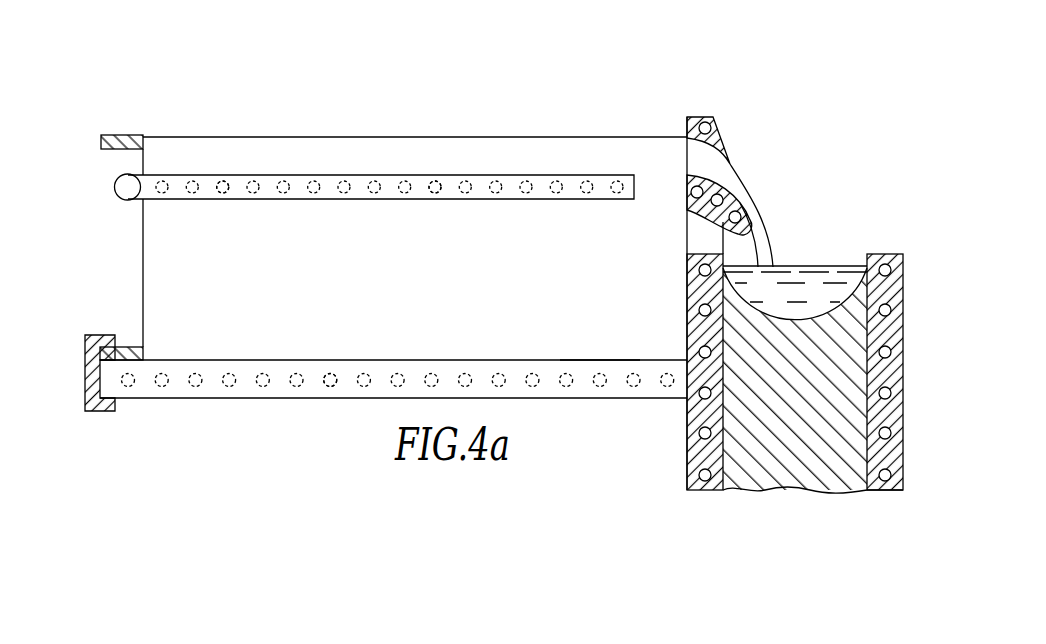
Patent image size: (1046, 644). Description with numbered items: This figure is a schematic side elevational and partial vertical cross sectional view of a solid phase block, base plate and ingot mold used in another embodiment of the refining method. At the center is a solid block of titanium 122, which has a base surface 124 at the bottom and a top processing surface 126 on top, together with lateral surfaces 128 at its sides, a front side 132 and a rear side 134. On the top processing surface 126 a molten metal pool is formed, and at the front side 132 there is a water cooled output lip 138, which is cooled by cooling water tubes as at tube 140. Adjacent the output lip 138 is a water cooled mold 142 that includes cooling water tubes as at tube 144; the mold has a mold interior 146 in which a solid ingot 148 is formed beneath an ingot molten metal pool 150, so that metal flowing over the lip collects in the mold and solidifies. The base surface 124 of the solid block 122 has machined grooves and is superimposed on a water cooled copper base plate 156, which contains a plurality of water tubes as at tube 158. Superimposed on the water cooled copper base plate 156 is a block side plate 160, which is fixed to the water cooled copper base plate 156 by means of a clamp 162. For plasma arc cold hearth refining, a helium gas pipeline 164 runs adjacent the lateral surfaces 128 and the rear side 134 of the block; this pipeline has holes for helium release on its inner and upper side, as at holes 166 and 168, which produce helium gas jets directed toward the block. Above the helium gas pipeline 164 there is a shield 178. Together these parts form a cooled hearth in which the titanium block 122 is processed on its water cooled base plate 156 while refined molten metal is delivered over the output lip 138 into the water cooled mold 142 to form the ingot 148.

The solid block of titanium 122 is at (110, 162).
The base surface 124 is at (597, 360).
The top processing surface 126 is at (482, 137).
The lateral surface 128 is at (160, 265).
The front side 132 is at (687, 246).
The rear side 134 is at (143, 208).
The water cooled output lip 138 is at (724, 150).
The cooling water tube 140 is at (705, 118).
The water cooled mold 142 is at (864, 503).
The cooling water tube 144 is at (870, 390).
The mold interior 146 is at (848, 226).
The solid ingot 148 is at (768, 480).
The ingot molten metal pool 150 is at (768, 310).
The water cooled copper base plate 156 is at (282, 400).
The water tube 158 is at (329, 372).
The block side plate 160 is at (140, 347).
The clamp 162 is at (100, 412).
The helium gas pipeline 164 is at (580, 200).
The hole 166 is at (225, 194).
The hole 168 is at (432, 193).
The shield 178 is at (110, 135).